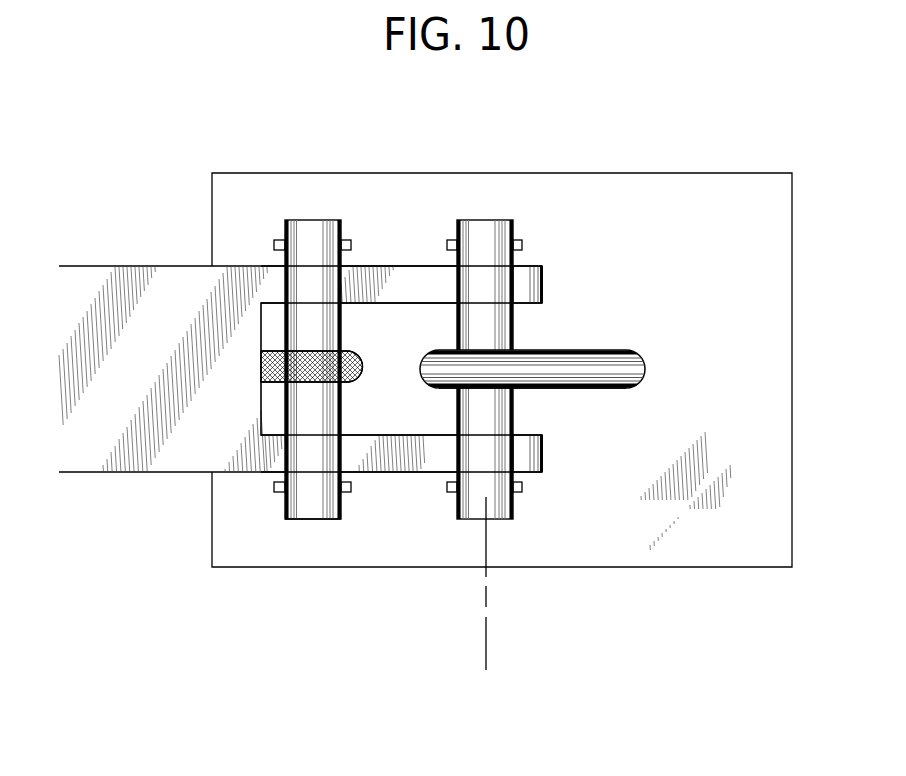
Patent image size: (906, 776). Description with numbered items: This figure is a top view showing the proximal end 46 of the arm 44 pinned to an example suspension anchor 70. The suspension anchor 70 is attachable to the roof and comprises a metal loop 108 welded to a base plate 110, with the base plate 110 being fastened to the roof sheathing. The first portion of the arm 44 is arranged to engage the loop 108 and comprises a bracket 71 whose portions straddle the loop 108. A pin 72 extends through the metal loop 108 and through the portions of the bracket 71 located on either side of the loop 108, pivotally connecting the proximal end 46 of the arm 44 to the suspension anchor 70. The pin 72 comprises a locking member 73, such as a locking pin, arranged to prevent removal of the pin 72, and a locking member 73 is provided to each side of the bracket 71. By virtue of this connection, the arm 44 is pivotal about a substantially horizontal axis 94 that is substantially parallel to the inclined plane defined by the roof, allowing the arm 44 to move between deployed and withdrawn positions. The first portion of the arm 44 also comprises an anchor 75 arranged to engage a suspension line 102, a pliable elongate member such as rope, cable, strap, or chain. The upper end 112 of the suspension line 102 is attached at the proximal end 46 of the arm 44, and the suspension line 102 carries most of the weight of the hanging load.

The arm 44 is at (176, 265).
The proximal end 46 is at (585, 271).
The suspension anchor 70 is at (606, 350).
The bracket 71 is at (566, 489).
The pin 72 is at (312, 219).
The locking member 73 is at (446, 246).
The anchor 75 is at (313, 520).
The substantially horizontal axis 94 is at (488, 641).
The suspension line 102 is at (300, 383).
The metal loop 108 is at (567, 388).
The base plate 110 is at (683, 210).
The upper end 112 is at (318, 351).